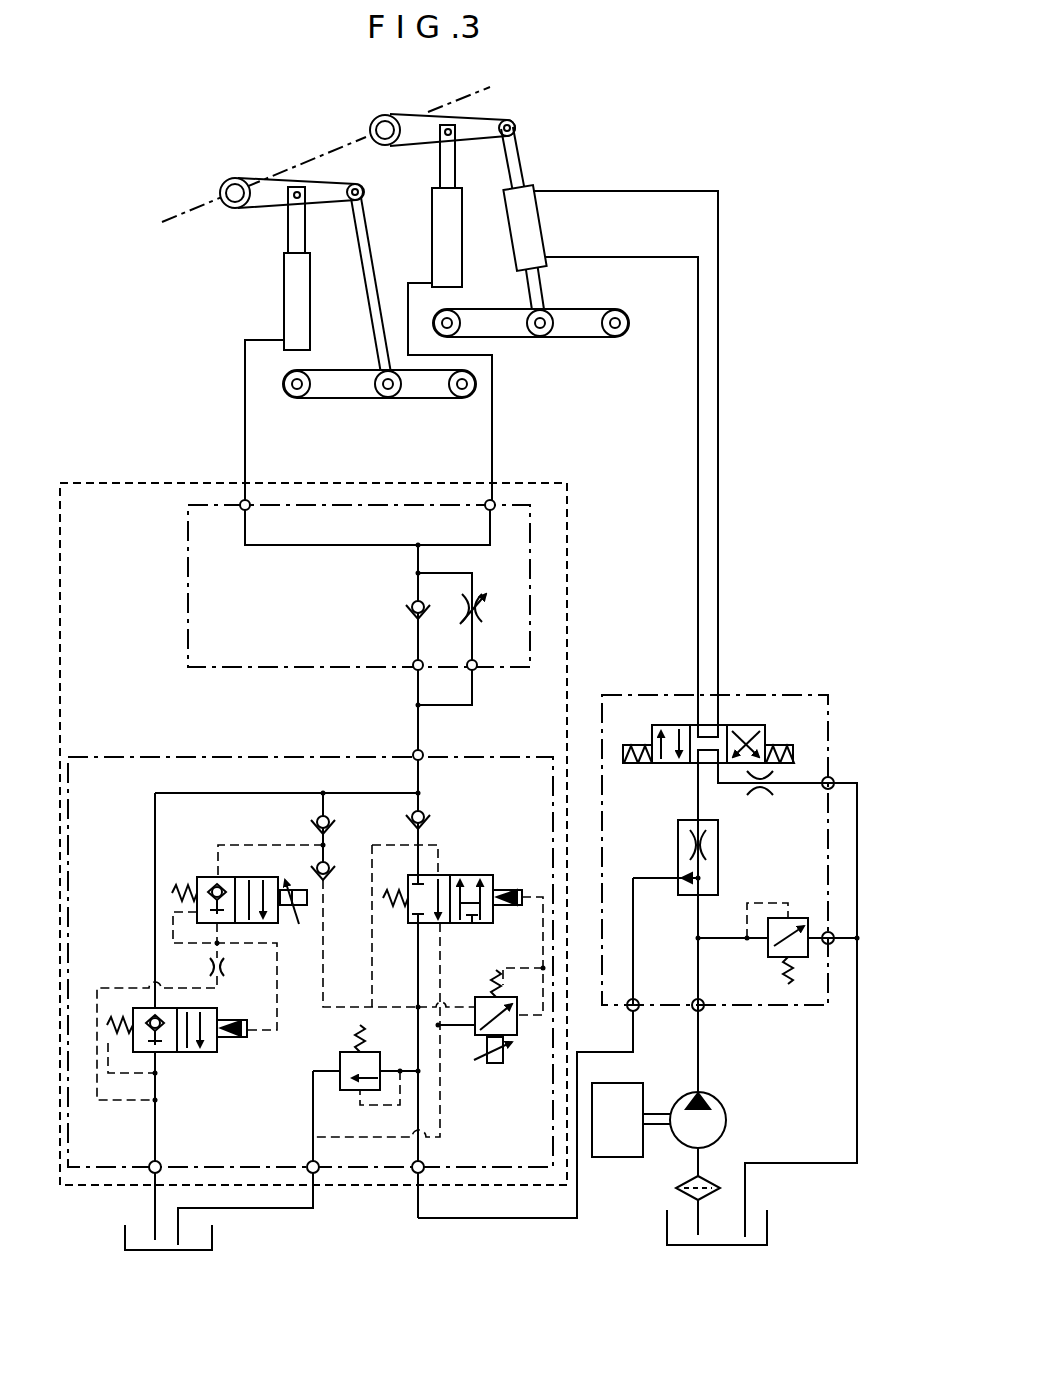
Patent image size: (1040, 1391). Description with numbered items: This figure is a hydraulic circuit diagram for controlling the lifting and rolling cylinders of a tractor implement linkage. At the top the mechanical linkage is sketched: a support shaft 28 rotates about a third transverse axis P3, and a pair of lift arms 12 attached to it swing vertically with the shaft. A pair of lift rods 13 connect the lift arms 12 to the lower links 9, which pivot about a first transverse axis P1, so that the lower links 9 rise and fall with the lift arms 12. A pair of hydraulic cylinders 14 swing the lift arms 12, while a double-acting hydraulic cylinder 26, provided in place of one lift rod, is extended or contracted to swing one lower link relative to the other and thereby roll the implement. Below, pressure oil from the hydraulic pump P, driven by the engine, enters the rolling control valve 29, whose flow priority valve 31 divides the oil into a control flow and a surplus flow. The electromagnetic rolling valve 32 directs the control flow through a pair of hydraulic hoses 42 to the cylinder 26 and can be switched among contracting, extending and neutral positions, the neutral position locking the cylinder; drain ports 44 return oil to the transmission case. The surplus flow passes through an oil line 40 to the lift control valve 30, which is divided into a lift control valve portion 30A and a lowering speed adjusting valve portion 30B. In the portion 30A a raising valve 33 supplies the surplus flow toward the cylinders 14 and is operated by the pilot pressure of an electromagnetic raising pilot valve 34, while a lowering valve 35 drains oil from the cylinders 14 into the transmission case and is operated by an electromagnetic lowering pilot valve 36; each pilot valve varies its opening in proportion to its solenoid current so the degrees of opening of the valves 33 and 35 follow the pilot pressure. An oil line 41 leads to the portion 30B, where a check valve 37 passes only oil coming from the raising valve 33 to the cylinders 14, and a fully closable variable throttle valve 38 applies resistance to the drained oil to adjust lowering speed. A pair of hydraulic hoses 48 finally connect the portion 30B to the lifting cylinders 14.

The lower links 9 is at (413, 392).
The lift arms 12 is at (483, 123).
The lift rods 13 is at (368, 275).
The hydraulic cylinders 14 is at (290, 293).
The double-acting hydraulic cylinder 26 is at (532, 228).
The support shaft 28 is at (370, 138).
The rolling control valve 29 is at (805, 695).
The lift control valve 30 is at (138, 483).
The lift control valve portion 30A is at (147, 757).
The lowering speed adjusting valve portion 30B is at (188, 637).
The flow priority valve 31 is at (678, 858).
The electromagnetic rolling valve 32 is at (742, 725).
The raising valve 33 is at (472, 873).
The electromagnetic raising pilot valve 34 is at (520, 1030).
The lowering valve 35 is at (182, 1055).
The electromagnetic lowering pilot valve 36 is at (207, 875).
The check valve 37 is at (412, 605).
The variable throttle valve 38 is at (483, 620).
The oil line 40 is at (577, 1172).
The oil line 41 is at (418, 725).
The hydraulic hoses 42 is at (698, 495).
The drain ports 44 is at (825, 787).
The hydraulic hoses 48 is at (245, 427).
The hydraulic pump P is at (728, 1118).
The first transverse axis P1 is at (297, 397).
The third transverse axis P3 is at (182, 218).